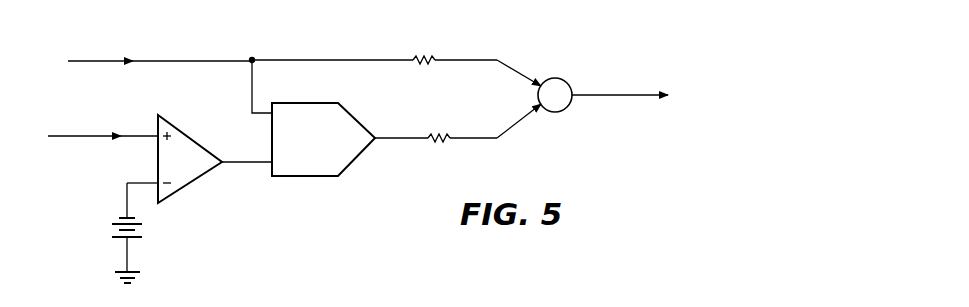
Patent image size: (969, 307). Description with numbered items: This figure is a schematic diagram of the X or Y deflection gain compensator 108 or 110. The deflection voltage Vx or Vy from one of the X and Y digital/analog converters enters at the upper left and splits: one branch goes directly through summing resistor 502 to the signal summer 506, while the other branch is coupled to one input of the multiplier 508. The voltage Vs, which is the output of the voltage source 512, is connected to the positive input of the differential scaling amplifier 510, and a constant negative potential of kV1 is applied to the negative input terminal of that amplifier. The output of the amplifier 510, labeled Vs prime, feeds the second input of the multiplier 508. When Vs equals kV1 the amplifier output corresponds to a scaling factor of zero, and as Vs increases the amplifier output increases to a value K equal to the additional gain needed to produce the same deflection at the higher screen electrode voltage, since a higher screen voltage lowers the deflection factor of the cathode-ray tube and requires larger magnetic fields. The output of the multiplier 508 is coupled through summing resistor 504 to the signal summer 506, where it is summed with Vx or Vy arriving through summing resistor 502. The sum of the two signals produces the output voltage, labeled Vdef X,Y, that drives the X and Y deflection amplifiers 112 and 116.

The summing resistor 502 is at (423, 56).
The summing resistor 504 is at (445, 143).
The signal summer 506 is at (557, 77).
The multiplier 508 is at (349, 112).
The differential scaling amplifier 510 is at (187, 128).
The voltage source 512 is at (112, 226).
The X deflection gain compensator 108 is at (405, 230).
The Y deflection gain compensator 110 is at (365, 150).
The X deflection amplifier 112 is at (650, 126).
The Y deflection amplifier 116 is at (650, 126).